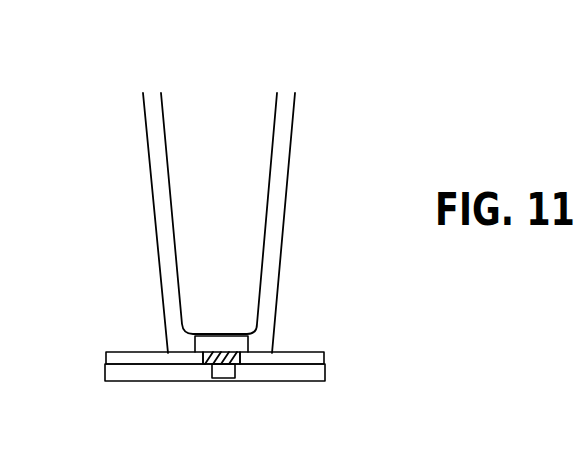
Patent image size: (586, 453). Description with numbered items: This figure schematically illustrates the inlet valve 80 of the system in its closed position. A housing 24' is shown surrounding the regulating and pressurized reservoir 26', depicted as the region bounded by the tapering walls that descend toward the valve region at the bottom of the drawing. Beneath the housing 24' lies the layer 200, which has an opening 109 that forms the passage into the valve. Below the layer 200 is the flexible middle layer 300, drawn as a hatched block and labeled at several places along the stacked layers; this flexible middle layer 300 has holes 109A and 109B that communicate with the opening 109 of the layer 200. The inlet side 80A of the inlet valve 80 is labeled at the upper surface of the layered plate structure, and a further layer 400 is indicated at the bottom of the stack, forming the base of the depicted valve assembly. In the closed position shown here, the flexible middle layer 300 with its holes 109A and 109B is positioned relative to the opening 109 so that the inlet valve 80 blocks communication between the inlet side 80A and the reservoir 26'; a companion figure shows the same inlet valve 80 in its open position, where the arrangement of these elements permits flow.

The layer 200 is at (287, 114).
The housing 24' is at (255, 213).
The regulating and pressurized reservoir 26' is at (219, 186).
The opening 109 is at (200, 340).
The hole 109A is at (204, 366).
The hole 109B is at (236, 378).
The flexible middle layer 300 is at (215, 358).
The inlet valve 80 is at (252, 381).
The inlet side 80A is at (274, 355).
The substrate 400 is at (310, 382).